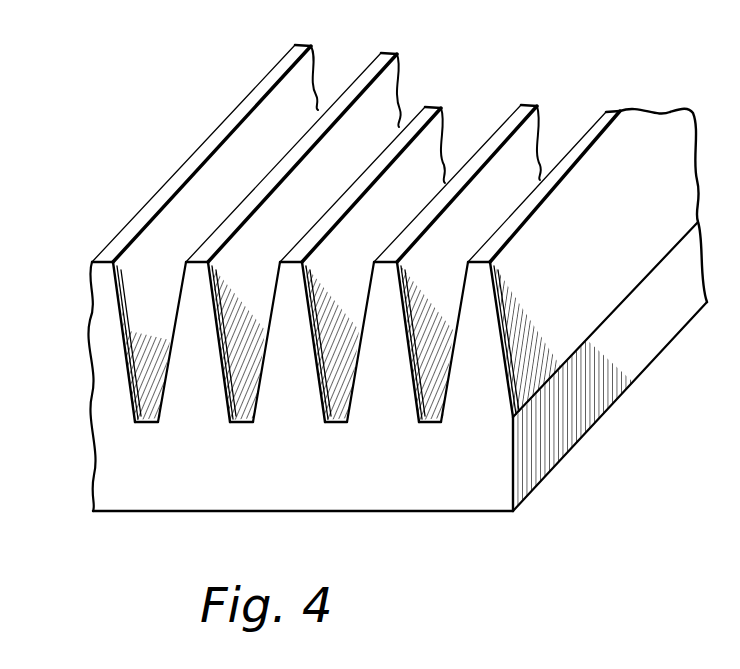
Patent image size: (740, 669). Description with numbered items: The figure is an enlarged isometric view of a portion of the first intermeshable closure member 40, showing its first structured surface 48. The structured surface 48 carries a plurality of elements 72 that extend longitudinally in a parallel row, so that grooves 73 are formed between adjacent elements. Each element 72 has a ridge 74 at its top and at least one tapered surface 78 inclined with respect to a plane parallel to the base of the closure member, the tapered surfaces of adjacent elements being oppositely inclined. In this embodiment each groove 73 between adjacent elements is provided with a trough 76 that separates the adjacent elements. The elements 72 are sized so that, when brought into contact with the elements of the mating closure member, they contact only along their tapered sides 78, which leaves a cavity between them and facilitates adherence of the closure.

The first intermeshable closure member 40 is at (118, 469).
The first structured surface 48 is at (220, 122).
The element 72 is at (388, 350).
The groove 73 is at (300, 107).
The ridge 74 is at (177, 173).
The trough 76 is at (322, 408).
The tapered surface 78 is at (172, 341).